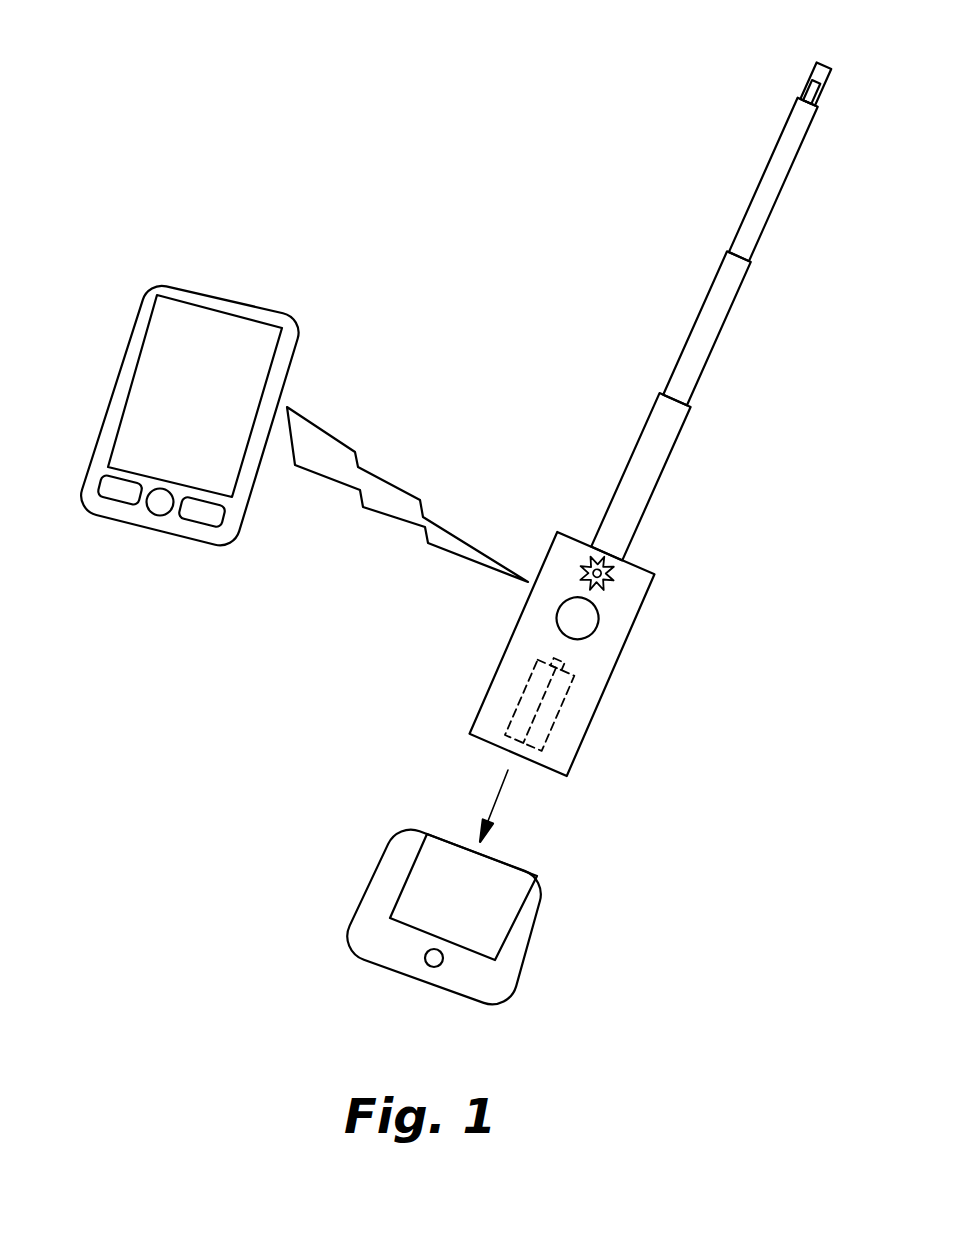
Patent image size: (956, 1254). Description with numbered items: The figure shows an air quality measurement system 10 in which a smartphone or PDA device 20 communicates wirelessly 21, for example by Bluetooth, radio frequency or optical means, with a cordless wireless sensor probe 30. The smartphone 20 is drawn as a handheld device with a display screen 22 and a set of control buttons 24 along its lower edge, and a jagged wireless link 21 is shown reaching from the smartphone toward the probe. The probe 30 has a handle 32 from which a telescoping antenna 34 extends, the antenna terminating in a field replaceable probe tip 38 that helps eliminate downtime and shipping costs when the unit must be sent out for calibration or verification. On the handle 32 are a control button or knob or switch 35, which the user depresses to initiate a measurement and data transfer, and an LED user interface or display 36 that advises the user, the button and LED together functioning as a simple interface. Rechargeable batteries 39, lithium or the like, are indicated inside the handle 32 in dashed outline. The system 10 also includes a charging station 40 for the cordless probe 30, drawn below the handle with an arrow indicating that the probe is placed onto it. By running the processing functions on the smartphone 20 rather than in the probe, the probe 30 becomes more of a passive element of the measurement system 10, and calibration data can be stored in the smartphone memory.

The air quality measurement system 10 is at (146, 57).
The smartphone or PDA device 20 is at (241, 277).
The wireless communication 21 is at (410, 523).
The display screen 22 is at (151, 358).
The control button 24 is at (108, 483).
The wireless sensor probe 30 is at (762, 295).
The handle 32 is at (644, 605).
The telescoping antenna 34 is at (661, 479).
The control button 35 is at (598, 626).
The LED user interface 36 is at (612, 572).
The field replaceable probe tip 38 is at (808, 86).
The rechargeable batteries 39 is at (557, 720).
The charging station 40 is at (368, 889).